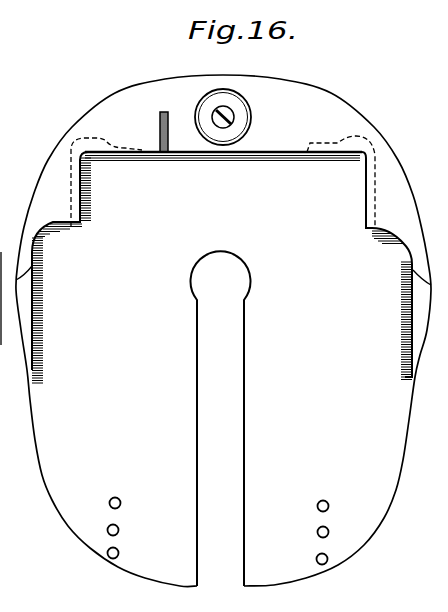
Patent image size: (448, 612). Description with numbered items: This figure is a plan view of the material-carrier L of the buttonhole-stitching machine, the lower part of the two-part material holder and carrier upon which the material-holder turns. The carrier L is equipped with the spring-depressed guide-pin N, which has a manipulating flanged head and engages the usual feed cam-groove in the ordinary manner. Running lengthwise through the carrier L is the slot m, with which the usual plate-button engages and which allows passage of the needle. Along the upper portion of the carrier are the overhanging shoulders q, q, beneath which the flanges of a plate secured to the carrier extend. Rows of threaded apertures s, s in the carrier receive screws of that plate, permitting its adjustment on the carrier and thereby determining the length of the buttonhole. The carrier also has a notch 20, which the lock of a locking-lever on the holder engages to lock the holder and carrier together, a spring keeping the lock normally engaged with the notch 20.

The notch 20 is at (160, 127).
The spring-depressed guide-pin N is at (250, 126).
The overhanging shoulders q is at (78, 193).
The material-carrier L is at (222, 267).
The slot m is at (221, 418).
The threaded apertures s is at (118, 534).